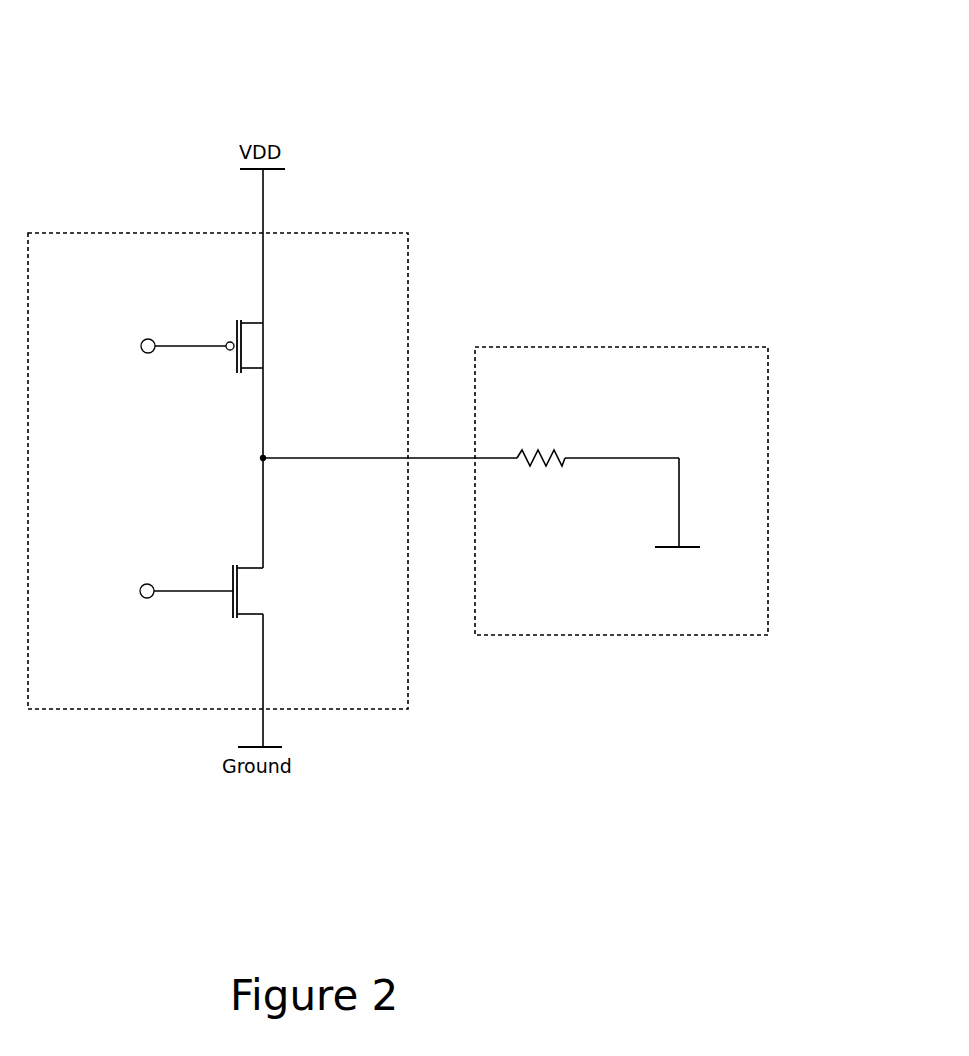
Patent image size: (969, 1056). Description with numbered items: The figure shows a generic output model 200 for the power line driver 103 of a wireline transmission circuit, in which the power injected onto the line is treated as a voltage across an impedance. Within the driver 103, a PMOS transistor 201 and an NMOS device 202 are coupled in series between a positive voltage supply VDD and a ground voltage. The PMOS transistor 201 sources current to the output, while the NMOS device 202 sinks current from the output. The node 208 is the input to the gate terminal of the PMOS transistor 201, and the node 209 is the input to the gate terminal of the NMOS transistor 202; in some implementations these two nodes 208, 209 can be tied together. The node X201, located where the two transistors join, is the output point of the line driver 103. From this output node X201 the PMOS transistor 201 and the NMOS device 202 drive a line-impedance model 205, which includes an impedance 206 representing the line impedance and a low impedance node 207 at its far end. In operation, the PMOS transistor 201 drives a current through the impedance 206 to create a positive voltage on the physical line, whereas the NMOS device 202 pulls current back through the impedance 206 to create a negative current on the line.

The generic output model 200 is at (497, 125).
The power line driver 103 is at (360, 709).
The PMOS transistor 201 is at (255, 345).
The NMOS device 202 is at (258, 590).
The line-impedance model 205 is at (710, 347).
The impedance 206 is at (555, 443).
The low impedance node 207 is at (723, 552).
The node 208 is at (135, 339).
The node 209 is at (135, 577).
The node X201 is at (262, 457).